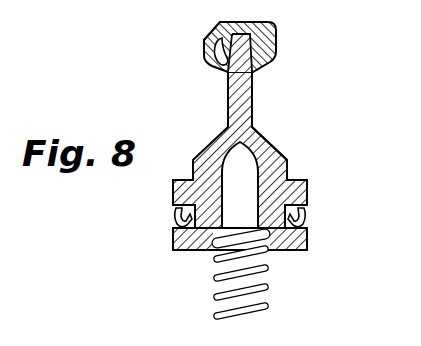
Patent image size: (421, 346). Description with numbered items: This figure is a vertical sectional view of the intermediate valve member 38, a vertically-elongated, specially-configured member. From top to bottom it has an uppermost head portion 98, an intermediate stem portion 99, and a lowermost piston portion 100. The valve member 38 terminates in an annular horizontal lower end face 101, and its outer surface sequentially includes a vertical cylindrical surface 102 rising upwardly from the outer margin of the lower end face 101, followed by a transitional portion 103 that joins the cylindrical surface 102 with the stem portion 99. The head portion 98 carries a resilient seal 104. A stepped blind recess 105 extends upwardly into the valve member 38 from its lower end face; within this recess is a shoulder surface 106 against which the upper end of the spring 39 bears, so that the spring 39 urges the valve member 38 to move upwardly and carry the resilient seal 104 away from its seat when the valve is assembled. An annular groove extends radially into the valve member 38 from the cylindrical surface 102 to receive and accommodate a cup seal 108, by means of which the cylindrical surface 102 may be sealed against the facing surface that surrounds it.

The valve member 38 is at (166, 115).
The head portion 98 is at (258, 34).
The stem portion 99 is at (243, 100).
The piston portion 100 is at (316, 184).
The lower end face 101 is at (296, 264).
The vertical cylindrical surface 102 is at (318, 243).
The transitional portion 103 is at (284, 133).
The resilient seal 104 is at (196, 33).
The stepped blind recess 105 is at (229, 178).
The shoulder surface 106 is at (217, 255).
The cup seal 108 is at (164, 227).
The spring 39 is at (204, 306).